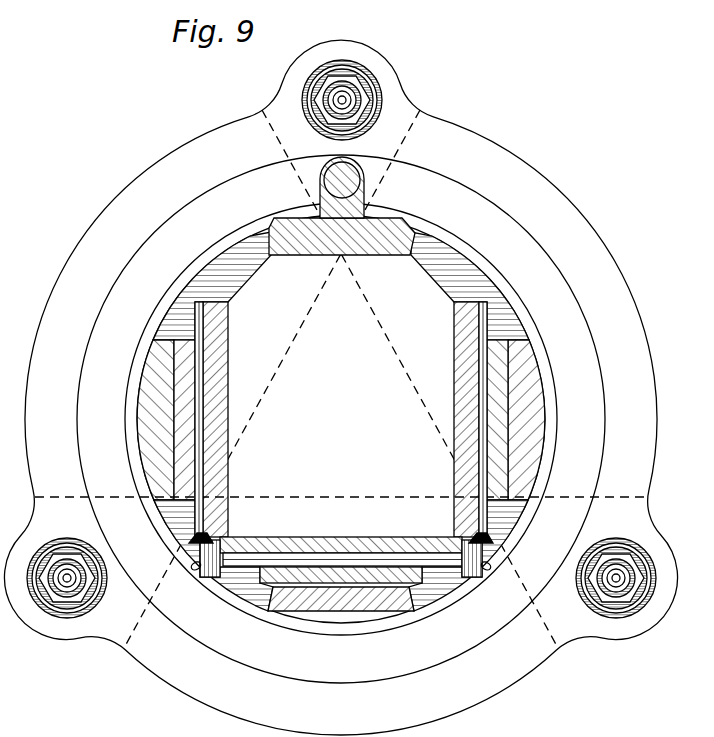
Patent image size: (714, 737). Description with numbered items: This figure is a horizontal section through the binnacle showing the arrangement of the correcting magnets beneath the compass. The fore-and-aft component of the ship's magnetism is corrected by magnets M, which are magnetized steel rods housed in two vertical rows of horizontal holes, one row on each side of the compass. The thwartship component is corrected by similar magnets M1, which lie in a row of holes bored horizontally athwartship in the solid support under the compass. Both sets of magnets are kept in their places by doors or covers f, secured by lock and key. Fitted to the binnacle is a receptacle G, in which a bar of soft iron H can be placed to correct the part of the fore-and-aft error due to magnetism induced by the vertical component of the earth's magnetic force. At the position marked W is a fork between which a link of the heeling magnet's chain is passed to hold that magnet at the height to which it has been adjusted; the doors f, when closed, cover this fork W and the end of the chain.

The receptacle G is at (333, 187).
The bar of soft iron H is at (342, 180).
The fore-and-aft magnets M is at (204, 401).
The thwartship magnets M1 is at (341, 547).
The fork W is at (217, 548).
The doors or covers f is at (199, 570).